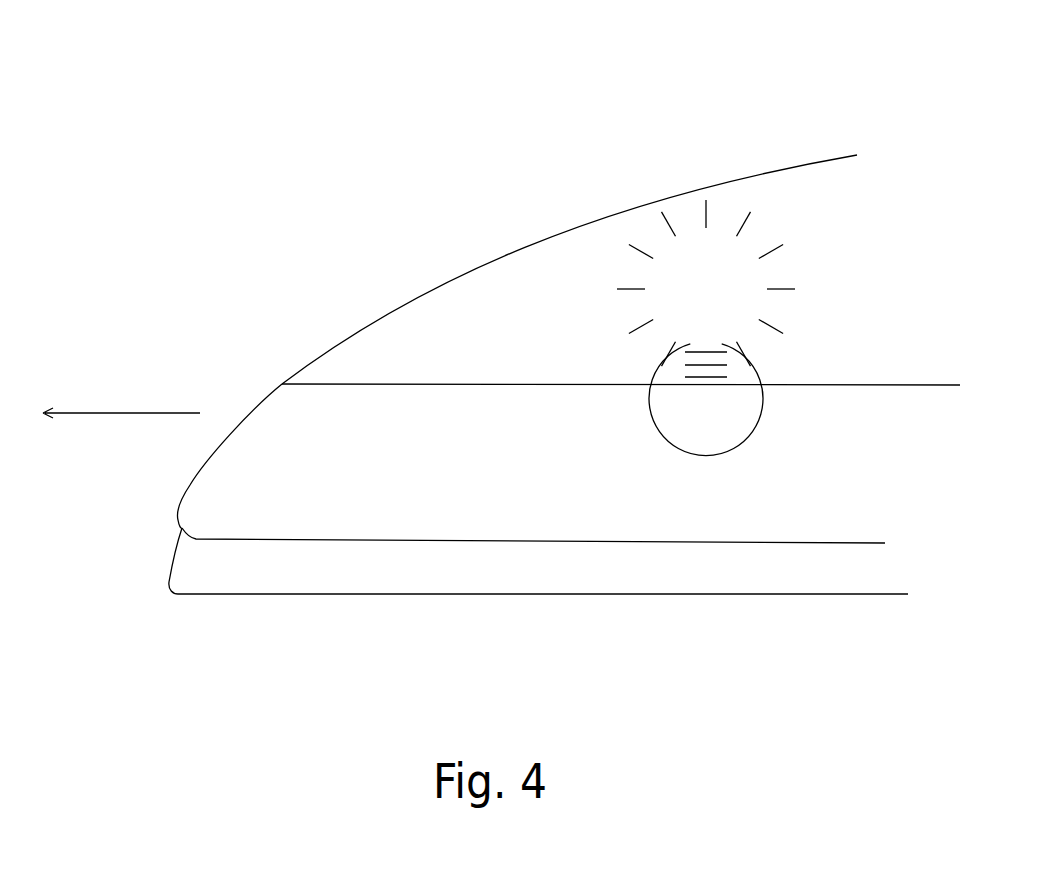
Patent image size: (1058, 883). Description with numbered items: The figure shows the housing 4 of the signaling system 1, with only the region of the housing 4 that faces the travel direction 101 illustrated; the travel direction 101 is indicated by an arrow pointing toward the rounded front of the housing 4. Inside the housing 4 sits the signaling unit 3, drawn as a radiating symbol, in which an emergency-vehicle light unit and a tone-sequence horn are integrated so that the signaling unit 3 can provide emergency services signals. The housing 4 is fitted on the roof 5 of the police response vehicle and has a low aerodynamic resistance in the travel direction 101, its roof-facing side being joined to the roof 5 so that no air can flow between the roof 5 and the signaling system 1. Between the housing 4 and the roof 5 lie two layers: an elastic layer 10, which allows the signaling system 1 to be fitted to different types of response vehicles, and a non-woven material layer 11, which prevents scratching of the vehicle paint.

The signaling system 1 is at (408, 88).
The signaling unit 3 is at (697, 263).
The housing 4 is at (395, 450).
The roof 5 is at (650, 608).
The elastic layer 10 is at (238, 578).
The non-woven material layer 11 is at (467, 598).
The travel direction 101 is at (120, 417).